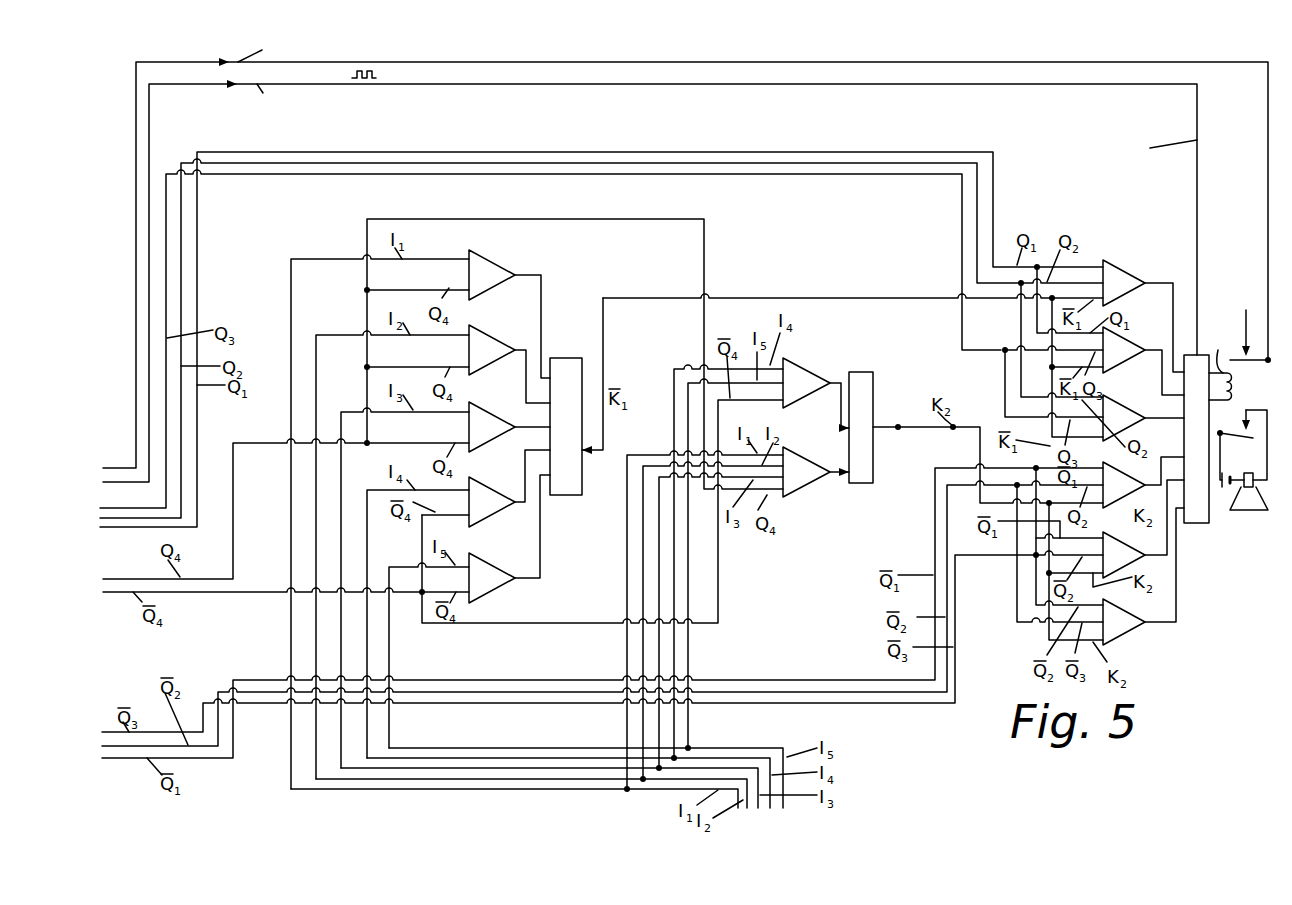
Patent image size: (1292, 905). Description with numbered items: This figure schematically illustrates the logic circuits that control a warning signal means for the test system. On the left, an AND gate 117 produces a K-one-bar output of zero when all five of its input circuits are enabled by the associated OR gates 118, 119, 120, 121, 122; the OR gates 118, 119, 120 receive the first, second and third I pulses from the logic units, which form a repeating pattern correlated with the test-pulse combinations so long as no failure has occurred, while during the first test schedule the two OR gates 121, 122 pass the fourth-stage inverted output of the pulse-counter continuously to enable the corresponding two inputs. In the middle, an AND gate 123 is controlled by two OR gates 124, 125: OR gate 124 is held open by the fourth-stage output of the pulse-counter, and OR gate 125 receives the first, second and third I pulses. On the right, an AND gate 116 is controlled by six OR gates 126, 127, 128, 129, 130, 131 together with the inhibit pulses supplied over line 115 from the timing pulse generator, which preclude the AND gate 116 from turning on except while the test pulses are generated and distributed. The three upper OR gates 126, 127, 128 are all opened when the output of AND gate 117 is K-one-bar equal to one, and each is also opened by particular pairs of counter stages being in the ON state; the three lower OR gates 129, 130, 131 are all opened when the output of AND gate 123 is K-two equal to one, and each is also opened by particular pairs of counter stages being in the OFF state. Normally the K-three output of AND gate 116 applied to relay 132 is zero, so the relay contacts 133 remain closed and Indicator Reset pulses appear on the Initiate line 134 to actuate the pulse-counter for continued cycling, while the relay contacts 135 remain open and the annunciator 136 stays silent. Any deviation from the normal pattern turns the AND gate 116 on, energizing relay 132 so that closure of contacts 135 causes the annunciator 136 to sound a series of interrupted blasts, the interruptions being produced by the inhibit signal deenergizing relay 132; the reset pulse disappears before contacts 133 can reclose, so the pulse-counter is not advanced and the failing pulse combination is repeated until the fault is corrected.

The line 115 is at (188, 87).
The AND gate 116 is at (1202, 353).
The AND gate 117 is at (557, 357).
The OR gate 118 is at (501, 262).
The OR gate 119 is at (490, 343).
The OR gate 120 is at (500, 395).
The OR gate 121 is at (488, 488).
The OR gate 122 is at (498, 563).
The AND gate 123 is at (872, 387).
The OR gate 124 is at (807, 368).
The OR gate 125 is at (803, 447).
The OR gate 126 is at (1115, 260).
The OR gate 127 is at (1130, 343).
The OR gate 128 is at (1123, 415).
The OR gate 129 is at (1113, 475).
The OR gate 130 is at (1118, 540).
The OR gate 131 is at (1132, 633).
The relay 132 is at (1239, 371).
The relay contacts 133 is at (1254, 348).
The Initiate line 134 is at (1109, 63).
The relay contacts 135 is at (1242, 448).
The annunciator 136 is at (1250, 510).